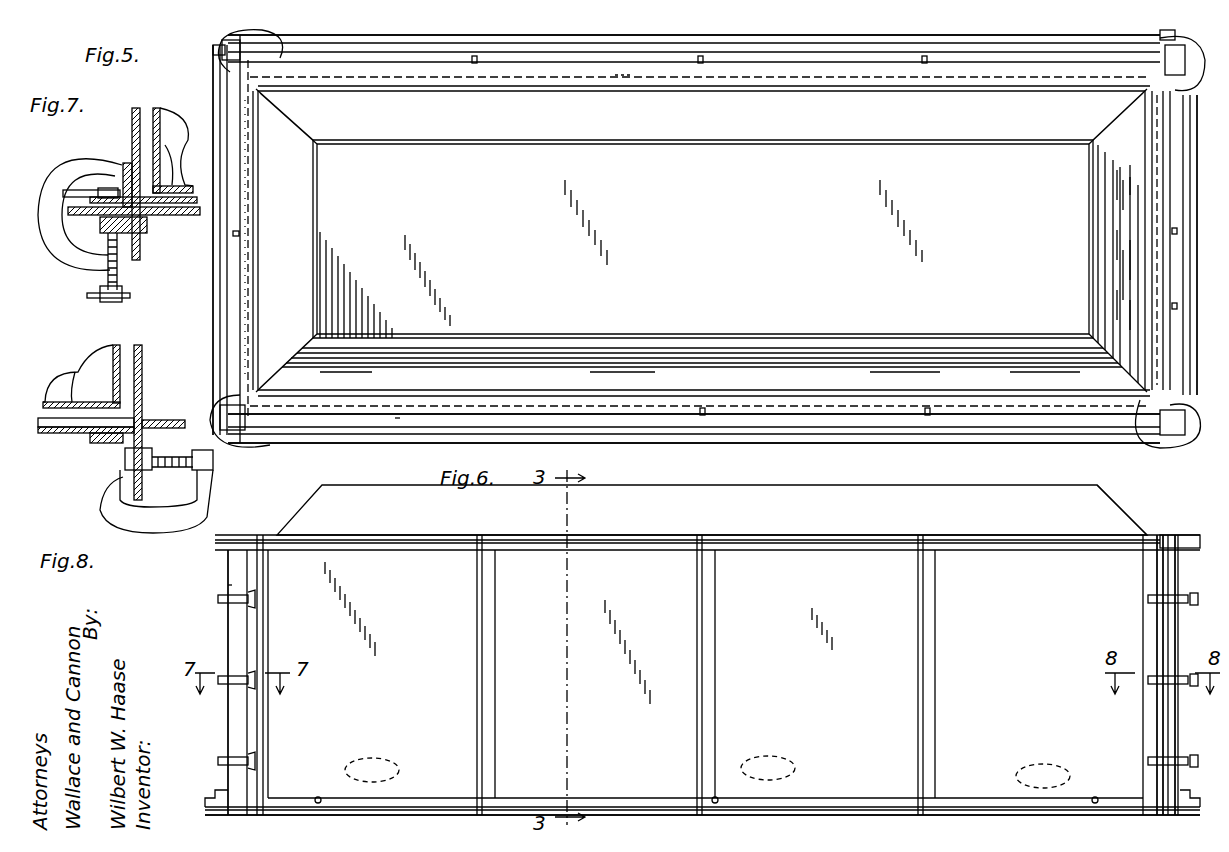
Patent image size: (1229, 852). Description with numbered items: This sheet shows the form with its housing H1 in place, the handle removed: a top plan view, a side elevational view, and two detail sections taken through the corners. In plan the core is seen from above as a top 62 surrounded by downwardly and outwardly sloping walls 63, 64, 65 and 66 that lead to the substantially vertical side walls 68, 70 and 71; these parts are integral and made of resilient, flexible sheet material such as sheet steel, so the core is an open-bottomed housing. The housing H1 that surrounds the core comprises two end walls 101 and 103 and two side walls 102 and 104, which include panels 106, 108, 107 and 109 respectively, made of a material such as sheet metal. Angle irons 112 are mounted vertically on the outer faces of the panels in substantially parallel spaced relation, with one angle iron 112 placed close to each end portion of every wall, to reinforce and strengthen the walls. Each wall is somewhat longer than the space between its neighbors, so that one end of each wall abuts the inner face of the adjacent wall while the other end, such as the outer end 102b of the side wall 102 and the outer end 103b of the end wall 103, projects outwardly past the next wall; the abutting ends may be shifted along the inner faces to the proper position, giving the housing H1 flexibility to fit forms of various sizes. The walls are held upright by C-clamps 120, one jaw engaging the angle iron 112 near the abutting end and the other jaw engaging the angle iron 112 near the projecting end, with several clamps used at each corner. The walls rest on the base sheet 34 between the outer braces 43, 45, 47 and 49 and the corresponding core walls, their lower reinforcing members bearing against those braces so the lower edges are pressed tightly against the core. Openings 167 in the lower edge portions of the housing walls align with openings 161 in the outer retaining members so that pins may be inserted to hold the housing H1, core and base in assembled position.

In FIG. 6, the base sheet 34 is at (840, 812).
In FIG. 5, the brace 43 is at (432, 50).
In FIG. 5, the brace 45 is at (1185, 178).
In FIG. 6, the brace 45 is at (1188, 806).
In FIG. 5, the brace 47 is at (676, 438).
In FIG. 6, the brace 47 is at (655, 790).
In FIG. 5, the brace 49 is at (220, 175).
In FIG. 6, the brace 49 is at (228, 802).
In FIG. 5, the top 62 is at (792, 207).
In FIG. 6, the top 62 is at (698, 487).
In FIG. 5, the sloping wall 63 is at (298, 204).
In FIG. 5, the sloping wall 64 is at (503, 142).
In FIG. 5, the sloping wall 65 is at (1113, 167).
In FIG. 6, the sloping wall 65 is at (1115, 508).
In FIG. 5, the sloping wall 66 is at (652, 362).
In FIG. 6, the sloping wall 66 is at (660, 515).
In FIG. 7, the side wall 68 is at (163, 125).
In FIG. 8, the side wall 70 is at (112, 352).
In FIG. 7, the side wall 71 is at (182, 155).
In FIG. 8, the side wall 71 is at (72, 392).
In FIG. 5, the end wall 101 is at (240, 294).
In FIG. 7, the end wall 101 is at (130, 127).
In FIG. 5, the side wall 102 is at (568, 63).
In FIG. 6, the outer end 102b is at (1187, 548).
In FIG. 5, the end wall 103 is at (1172, 304).
In FIG. 8, the end wall 103 is at (150, 366).
In FIG. 6, the outer end 103b is at (1165, 540).
In FIG. 5, the side wall 104 is at (796, 420).
In FIG. 7, the side wall 104 is at (184, 226).
In FIG. 8, the side wall 104 is at (58, 436).
In FIG. 6, the side wall 104 is at (395, 723).
In FIG. 5, the panel 106 is at (250, 318).
In FIG. 5, the panel 107 is at (622, 78).
In FIG. 5, the panel 108 is at (1158, 262).
In FIG. 6, the panel 108 is at (1165, 737).
In FIG. 5, the panel 109 is at (872, 408).
In FIG. 6, the panel 109 is at (232, 716).
In FIG. 5, the angle iron 112 is at (702, 63).
In FIG. 7, the angle iron 112 is at (125, 160).
In FIG. 8, the angle iron 112 is at (97, 438).
In FIG. 6, the angle iron 112 is at (250, 574).
In FIG. 5, the C-clamp 120 is at (225, 70).
In FIG. 7, the C-clamp 120 is at (55, 270).
In FIG. 8, the C-clamp 120 is at (100, 498).
In FIG. 6, the C-clamp 120 is at (228, 655).
In FIG. 6, the opening 161 is at (318, 797).
In FIG. 6, the opening 167 is at (322, 800).
In FIG. 5, the housing H1 is at (398, 430).
In FIG. 6, the housing H1 is at (220, 592).